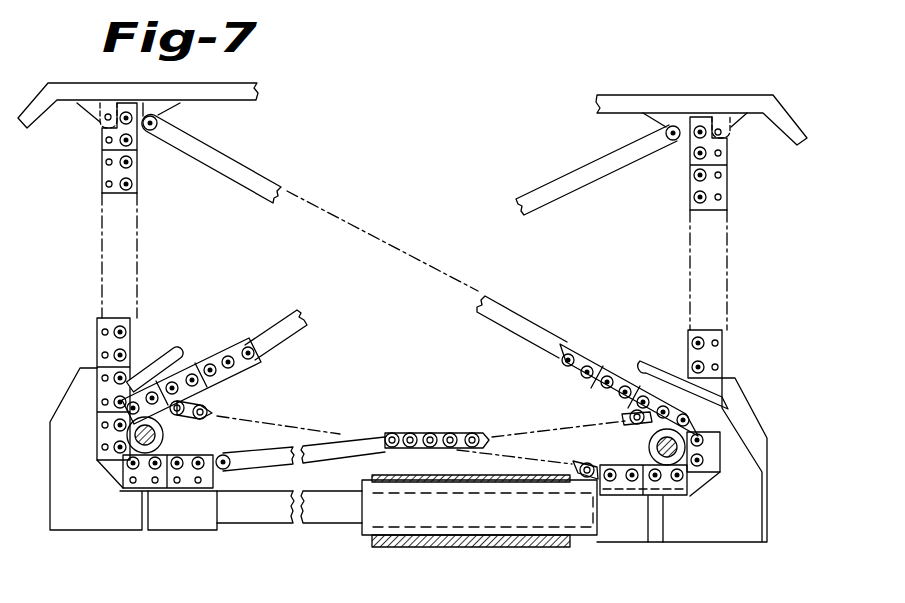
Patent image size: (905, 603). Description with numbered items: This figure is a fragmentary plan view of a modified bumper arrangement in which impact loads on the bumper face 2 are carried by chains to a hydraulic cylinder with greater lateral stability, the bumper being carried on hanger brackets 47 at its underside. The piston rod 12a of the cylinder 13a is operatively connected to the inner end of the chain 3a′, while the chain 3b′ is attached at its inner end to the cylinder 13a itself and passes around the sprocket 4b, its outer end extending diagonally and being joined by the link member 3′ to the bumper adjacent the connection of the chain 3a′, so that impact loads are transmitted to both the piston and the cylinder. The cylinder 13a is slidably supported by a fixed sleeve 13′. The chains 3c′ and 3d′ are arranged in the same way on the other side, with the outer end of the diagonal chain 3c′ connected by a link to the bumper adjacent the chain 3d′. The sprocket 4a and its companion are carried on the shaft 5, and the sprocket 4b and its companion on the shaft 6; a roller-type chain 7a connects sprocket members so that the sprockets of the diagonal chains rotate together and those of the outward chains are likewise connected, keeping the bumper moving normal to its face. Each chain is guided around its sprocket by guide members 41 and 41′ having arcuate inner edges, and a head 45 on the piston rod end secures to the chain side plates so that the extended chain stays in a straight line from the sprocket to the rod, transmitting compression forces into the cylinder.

The face 2 is at (209, 94).
The hanger bracket 47 is at (95, 114).
The chain 3a′ is at (105, 173).
The chain 3d′ is at (717, 188).
The link member 3′ is at (543, 323).
The chain 3c′ is at (215, 352).
The chain 3b′ is at (602, 362).
The shaft 5 is at (128, 430).
The shaft 6 is at (686, 446).
The sprocket 4a is at (176, 434).
The sprocket 4b is at (648, 428).
The chain 7a is at (430, 435).
The guide member 41 is at (148, 358).
The frame body 41′ is at (82, 518).
The head 45 is at (175, 523).
The piston rod 12a is at (298, 518).
The fixed sleeve 13′ is at (472, 547).
The cylinder 13a is at (402, 517).